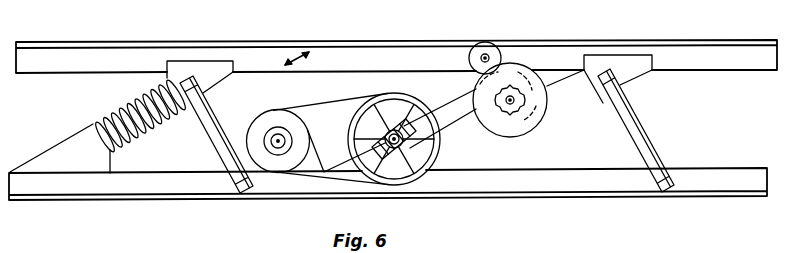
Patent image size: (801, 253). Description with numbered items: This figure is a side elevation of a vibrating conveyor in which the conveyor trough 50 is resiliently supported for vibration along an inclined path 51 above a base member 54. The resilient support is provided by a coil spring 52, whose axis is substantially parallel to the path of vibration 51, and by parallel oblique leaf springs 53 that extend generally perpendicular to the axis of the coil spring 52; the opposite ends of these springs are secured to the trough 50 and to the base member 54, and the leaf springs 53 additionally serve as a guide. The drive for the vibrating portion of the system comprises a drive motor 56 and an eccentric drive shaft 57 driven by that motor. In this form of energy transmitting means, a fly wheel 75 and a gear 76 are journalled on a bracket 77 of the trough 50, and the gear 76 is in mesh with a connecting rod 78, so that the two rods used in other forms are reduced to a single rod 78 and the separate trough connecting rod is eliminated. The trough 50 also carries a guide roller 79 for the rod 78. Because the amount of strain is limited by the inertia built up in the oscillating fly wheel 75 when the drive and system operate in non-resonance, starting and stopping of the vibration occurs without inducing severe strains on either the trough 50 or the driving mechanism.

The conveyor trough 50 is at (396, 56).
The inclined path of vibration 51 is at (293, 60).
The coil spring 52 is at (125, 110).
The leaf spring 53 is at (208, 135).
The base member 54 is at (547, 187).
The drive motor 56 is at (268, 121).
The eccentric drive shaft 57 is at (428, 150).
The fly wheel 75 is at (535, 127).
The gear 76 is at (509, 114).
The bracket 77 is at (546, 100).
The connecting rod 78 is at (445, 103).
The guide roller 79 is at (492, 50).